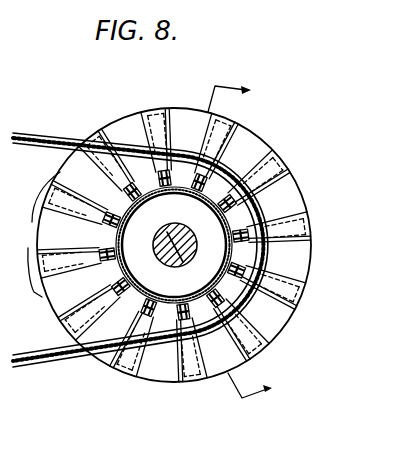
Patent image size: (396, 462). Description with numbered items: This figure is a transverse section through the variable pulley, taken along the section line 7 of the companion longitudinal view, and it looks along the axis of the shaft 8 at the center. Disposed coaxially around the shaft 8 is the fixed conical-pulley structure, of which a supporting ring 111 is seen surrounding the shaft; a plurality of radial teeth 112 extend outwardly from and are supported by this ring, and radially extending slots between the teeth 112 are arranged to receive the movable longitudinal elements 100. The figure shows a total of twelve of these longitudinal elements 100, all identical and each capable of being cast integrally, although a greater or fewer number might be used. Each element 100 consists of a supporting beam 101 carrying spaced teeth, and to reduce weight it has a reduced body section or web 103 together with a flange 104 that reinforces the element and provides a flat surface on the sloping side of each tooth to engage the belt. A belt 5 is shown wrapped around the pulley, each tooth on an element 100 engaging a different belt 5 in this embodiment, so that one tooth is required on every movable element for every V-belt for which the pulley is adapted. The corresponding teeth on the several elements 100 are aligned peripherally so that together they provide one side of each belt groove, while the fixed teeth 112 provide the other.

The V-belt 5 is at (45, 134).
The section line 7— 7 is at (249, 242).
The shaft 8 is at (186, 249).
The longitudinal element 100 is at (148, 110).
The supporting beam 101 is at (166, 188).
The web 103 is at (59, 319).
The flange 104 is at (141, 294).
The supporting ring 111 is at (142, 208).
The radial teeth 112 is at (50, 230).